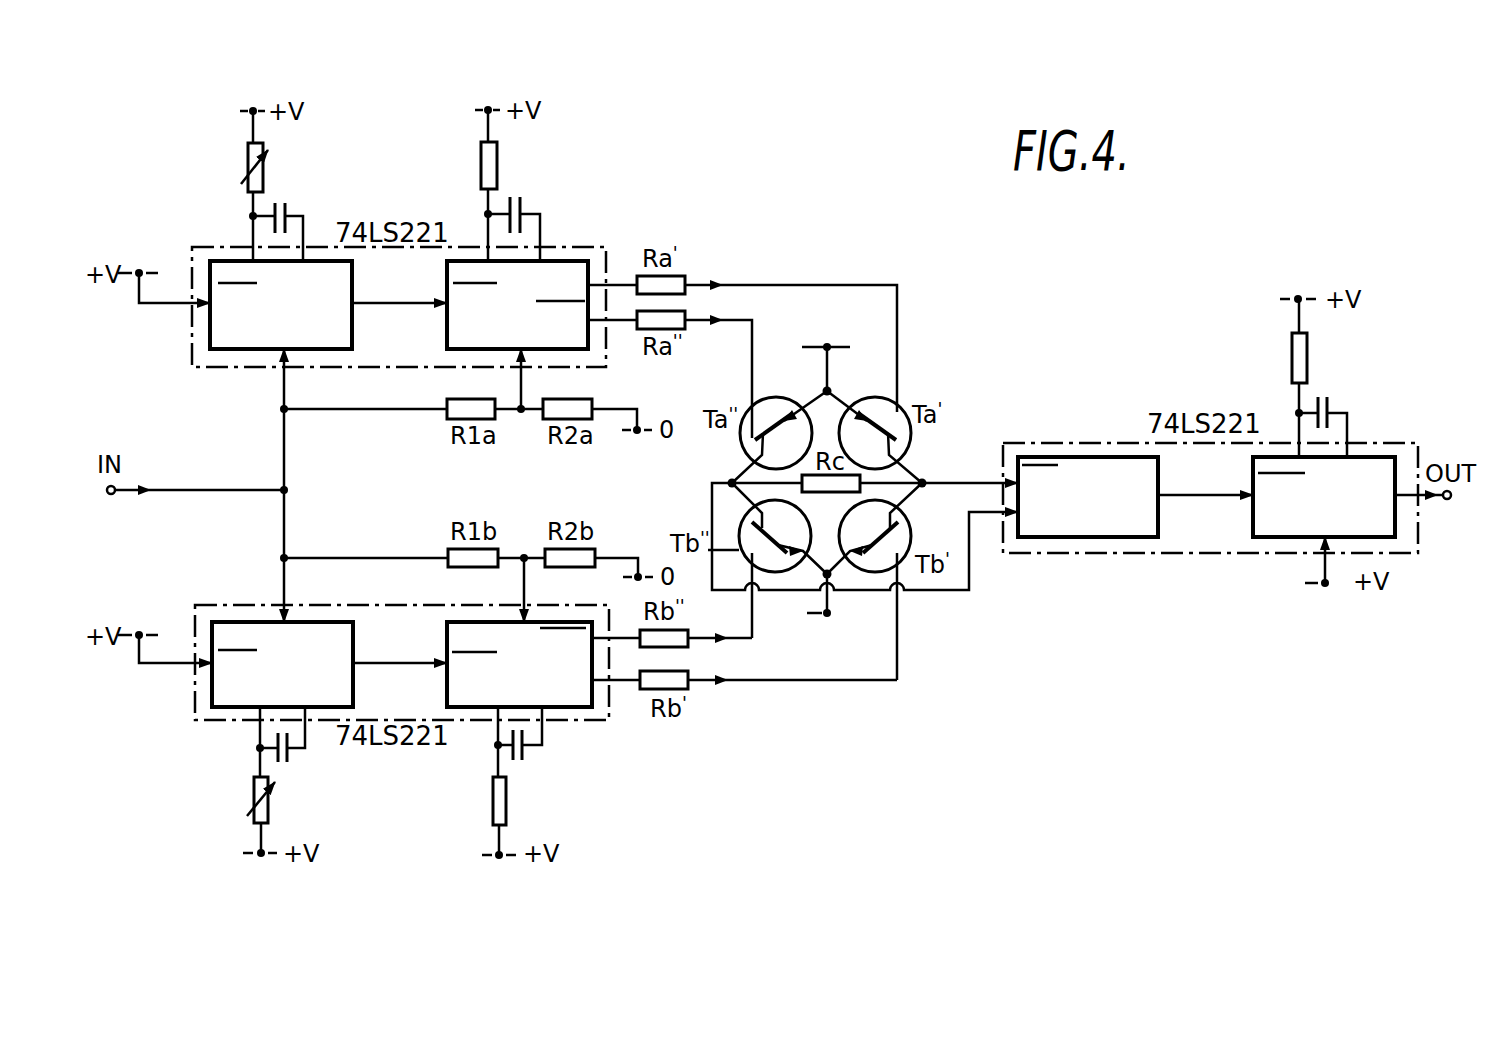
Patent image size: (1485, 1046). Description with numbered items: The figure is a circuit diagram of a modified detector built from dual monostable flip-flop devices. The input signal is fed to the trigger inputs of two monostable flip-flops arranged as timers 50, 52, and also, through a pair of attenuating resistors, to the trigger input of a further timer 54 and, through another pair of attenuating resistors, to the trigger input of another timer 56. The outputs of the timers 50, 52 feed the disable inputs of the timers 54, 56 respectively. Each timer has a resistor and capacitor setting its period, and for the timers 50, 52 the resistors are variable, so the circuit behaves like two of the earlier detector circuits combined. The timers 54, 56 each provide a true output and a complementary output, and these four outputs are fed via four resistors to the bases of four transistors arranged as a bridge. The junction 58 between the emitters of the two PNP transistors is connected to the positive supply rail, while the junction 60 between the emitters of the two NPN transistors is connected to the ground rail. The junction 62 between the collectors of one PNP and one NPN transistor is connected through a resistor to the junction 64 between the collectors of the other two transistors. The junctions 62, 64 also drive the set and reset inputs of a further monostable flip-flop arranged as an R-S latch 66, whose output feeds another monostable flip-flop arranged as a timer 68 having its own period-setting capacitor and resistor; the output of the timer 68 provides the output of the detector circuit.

The timer 50 is at (243, 367).
The timer 52 is at (228, 620).
The further timer 54 is at (570, 250).
The another timer 56 is at (572, 712).
The junction 58 is at (833, 389).
The junction 60 is at (822, 577).
The junction 62 is at (925, 481).
The junction 64 is at (730, 482).
The R-S latch 66 is at (1108, 538).
The timer 68 is at (1293, 538).